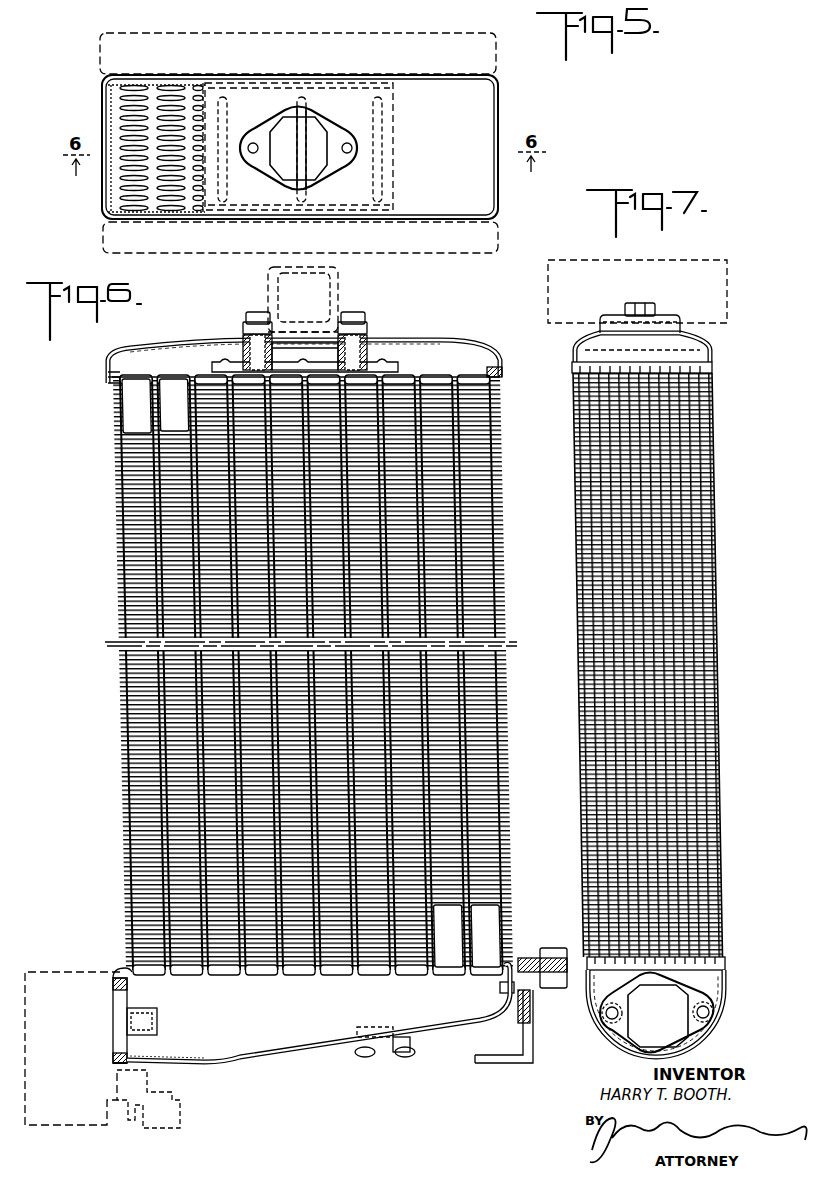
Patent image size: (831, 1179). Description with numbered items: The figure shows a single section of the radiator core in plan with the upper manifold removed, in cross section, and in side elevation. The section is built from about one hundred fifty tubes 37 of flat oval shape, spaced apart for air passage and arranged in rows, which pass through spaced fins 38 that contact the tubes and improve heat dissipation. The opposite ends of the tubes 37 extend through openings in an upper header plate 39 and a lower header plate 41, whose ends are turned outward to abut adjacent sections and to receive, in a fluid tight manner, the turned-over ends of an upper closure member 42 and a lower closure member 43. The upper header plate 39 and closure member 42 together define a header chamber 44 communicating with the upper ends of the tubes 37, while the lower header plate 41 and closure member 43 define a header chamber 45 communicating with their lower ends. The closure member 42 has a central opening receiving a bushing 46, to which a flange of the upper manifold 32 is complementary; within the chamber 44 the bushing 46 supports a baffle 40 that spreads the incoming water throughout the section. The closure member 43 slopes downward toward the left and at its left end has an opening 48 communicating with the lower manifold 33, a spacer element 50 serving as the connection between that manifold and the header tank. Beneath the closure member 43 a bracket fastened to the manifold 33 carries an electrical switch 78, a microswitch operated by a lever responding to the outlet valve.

In FIG. 6, the upper manifold 32 is at (340, 283).
In FIG. 7, the upper manifold 32 is at (730, 273).
In FIG. 6, the lower manifold 33 is at (72, 1128).
In FIG. 5, the tubes 37 is at (118, 117).
In FIG. 6, the tubes 37 is at (138, 395).
In FIG. 7, the tubes 37 is at (708, 412).
In FIG. 6, the fins 38 is at (115, 437).
In FIG. 7, the fins 38 is at (712, 457).
In FIG. 5, the upper header plate 39 is at (106, 207).
In FIG. 6, the upper header plate 39 is at (110, 376).
In FIG. 5, the baffle 40 is at (389, 110).
In FIG. 6, the baffle 40 is at (216, 360).
In FIG. 6, the lower header plate 41 is at (116, 972).
In FIG. 5, the closure member 42 is at (100, 52).
In FIG. 6, the closure member 42 is at (455, 342).
In FIG. 7, the closure member 42 is at (683, 345).
In FIG. 6, the closure member 43 is at (310, 1050).
In FIG. 7, the closure member 43 is at (713, 985).
In FIG. 6, the header chamber 44 is at (153, 361).
In FIG. 6, the header chamber 45 is at (236, 1030).
In FIG. 5, the bushing 46 is at (255, 133).
In FIG. 6, the bushing 46 is at (366, 341).
In FIG. 6, the opening 48 is at (112, 998).
In FIG. 7, the opening 48 is at (637, 1040).
In FIG. 6, the spacer element 50 is at (115, 1058).
In FIG. 7, the spacer element 50 is at (718, 1027).
In FIG. 6, the electrical switch 78 is at (172, 1122).